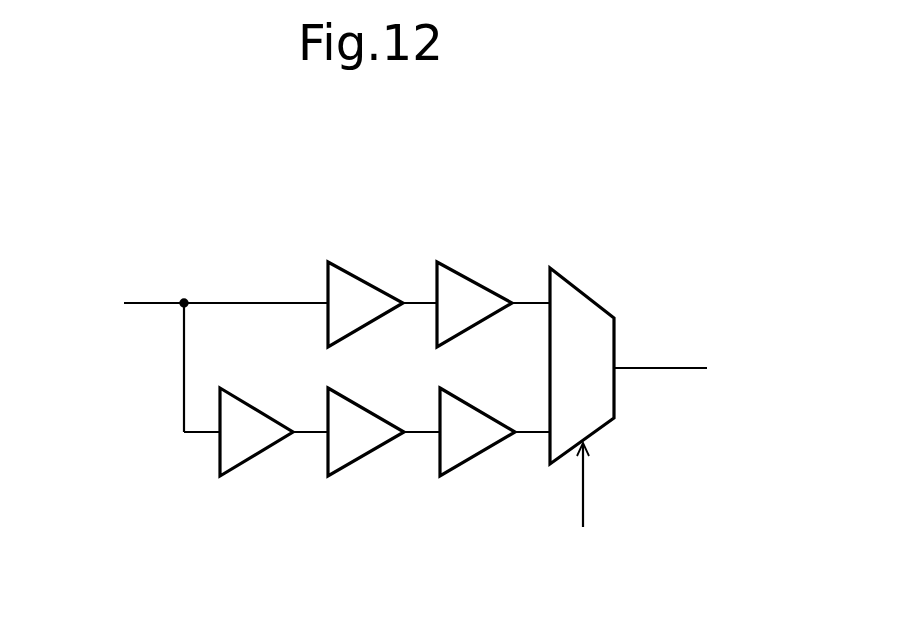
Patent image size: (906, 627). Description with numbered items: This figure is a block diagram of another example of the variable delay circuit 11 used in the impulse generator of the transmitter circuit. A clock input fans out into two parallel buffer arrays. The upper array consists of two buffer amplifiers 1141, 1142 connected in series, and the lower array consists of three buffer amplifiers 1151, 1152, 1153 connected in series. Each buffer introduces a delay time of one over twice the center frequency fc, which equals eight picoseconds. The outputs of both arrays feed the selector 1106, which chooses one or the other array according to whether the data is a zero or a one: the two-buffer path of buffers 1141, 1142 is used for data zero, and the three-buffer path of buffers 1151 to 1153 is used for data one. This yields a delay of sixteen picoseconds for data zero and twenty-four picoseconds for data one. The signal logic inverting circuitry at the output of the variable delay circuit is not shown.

The variable delay circuit 11 is at (432, 168).
The buffer amplifier 1141 is at (328, 275).
The buffer amplifier 1142 is at (500, 292).
The buffer amplifier 1151 is at (220, 455).
The buffer amplifier 1152 is at (366, 455).
The buffer amplifier 1153 is at (490, 455).
The selector 1106 is at (614, 328).